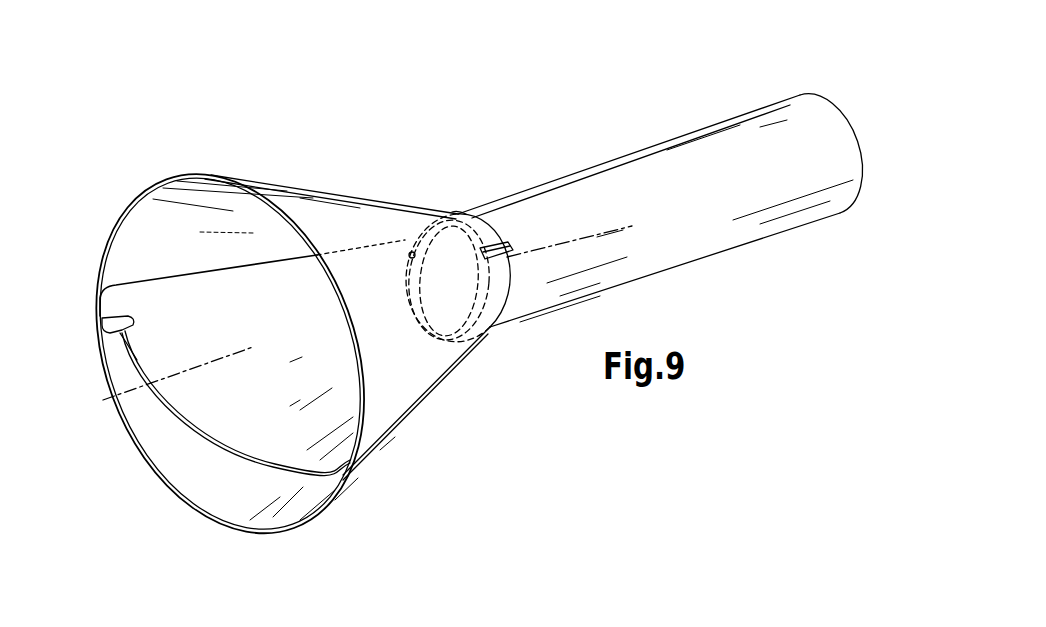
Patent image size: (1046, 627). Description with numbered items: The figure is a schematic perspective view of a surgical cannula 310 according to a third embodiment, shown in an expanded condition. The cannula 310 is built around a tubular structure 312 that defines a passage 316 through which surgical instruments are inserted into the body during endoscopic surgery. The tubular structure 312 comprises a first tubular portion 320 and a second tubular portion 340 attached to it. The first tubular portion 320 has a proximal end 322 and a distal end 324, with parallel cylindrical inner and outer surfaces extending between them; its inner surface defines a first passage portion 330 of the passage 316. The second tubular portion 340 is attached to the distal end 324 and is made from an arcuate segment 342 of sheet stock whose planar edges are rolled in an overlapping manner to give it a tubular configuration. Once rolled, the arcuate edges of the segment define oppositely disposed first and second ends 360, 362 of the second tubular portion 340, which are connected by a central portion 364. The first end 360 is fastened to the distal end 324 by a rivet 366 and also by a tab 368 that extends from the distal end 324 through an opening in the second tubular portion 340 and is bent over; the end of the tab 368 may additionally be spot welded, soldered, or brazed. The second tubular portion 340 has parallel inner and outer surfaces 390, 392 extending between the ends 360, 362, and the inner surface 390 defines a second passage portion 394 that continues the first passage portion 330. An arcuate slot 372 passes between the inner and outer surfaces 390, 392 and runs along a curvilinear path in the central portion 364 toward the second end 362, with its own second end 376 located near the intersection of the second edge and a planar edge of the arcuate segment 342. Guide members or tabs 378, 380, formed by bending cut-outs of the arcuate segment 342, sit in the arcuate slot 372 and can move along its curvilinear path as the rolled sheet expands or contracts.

The cannula 310 is at (685, 75).
The tubular structure 312 is at (562, 316).
The passage 316 is at (437, 257).
The first tubular portion 320 is at (772, 246).
The proximal end 322 is at (833, 117).
The distal end 324 is at (459, 212).
The first passage portion 330 is at (457, 295).
The second tubular portion 340 is at (455, 391).
The arcuate segment 342 is at (298, 505).
The first end 360 is at (480, 230).
The second end 362 is at (197, 493).
The central portion 364 is at (308, 210).
The rivet 366 is at (405, 240).
The tab 368 is at (484, 248).
The arcuate slot 372 is at (177, 420).
The second end of arcuate slot 376 is at (128, 358).
The guide member 378 is at (122, 318).
The guide member 380 is at (100, 313).
The inner surface 390 is at (268, 507).
The outer surface 392 is at (397, 428).
The second passage portion 394 is at (165, 237).